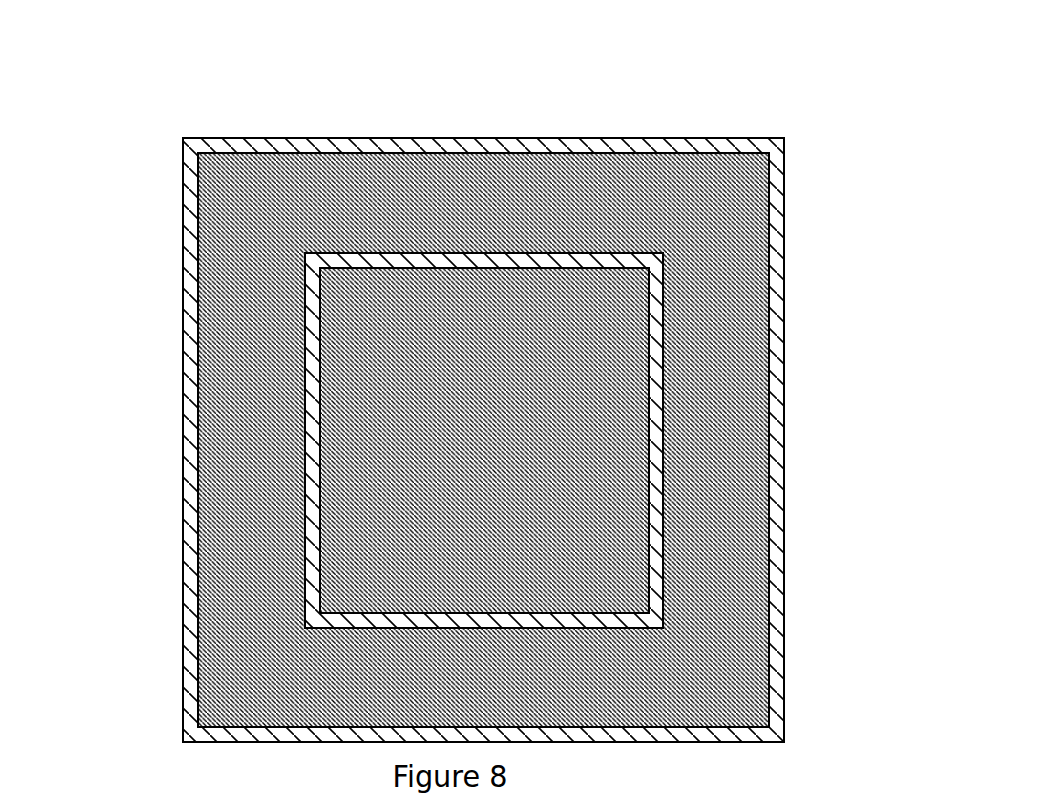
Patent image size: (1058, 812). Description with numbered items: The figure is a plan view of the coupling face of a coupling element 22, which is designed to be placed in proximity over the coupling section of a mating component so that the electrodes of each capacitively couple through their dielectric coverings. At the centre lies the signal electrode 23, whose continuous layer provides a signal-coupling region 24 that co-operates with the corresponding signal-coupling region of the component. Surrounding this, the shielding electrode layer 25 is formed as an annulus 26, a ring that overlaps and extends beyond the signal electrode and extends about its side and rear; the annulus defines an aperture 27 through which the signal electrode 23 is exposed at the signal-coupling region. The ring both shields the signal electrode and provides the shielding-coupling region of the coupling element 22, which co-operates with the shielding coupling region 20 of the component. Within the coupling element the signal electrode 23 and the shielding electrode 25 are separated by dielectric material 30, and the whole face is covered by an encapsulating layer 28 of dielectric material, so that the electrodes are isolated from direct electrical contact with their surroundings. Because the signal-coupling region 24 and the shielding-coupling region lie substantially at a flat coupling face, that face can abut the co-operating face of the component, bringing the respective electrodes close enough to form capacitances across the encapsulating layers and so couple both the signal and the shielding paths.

The shielding coupling region 20 is at (226, 622).
The coupling element 22 is at (836, 268).
The signal electrode 23 is at (580, 510).
The signal-coupling region 24 is at (577, 446).
The shielding electrode layer 25 is at (225, 487).
The annulus 26 is at (728, 205).
The aperture 27 is at (366, 342).
The encapsulating layer 28 is at (631, 130).
The dielectric material 30 is at (657, 395).